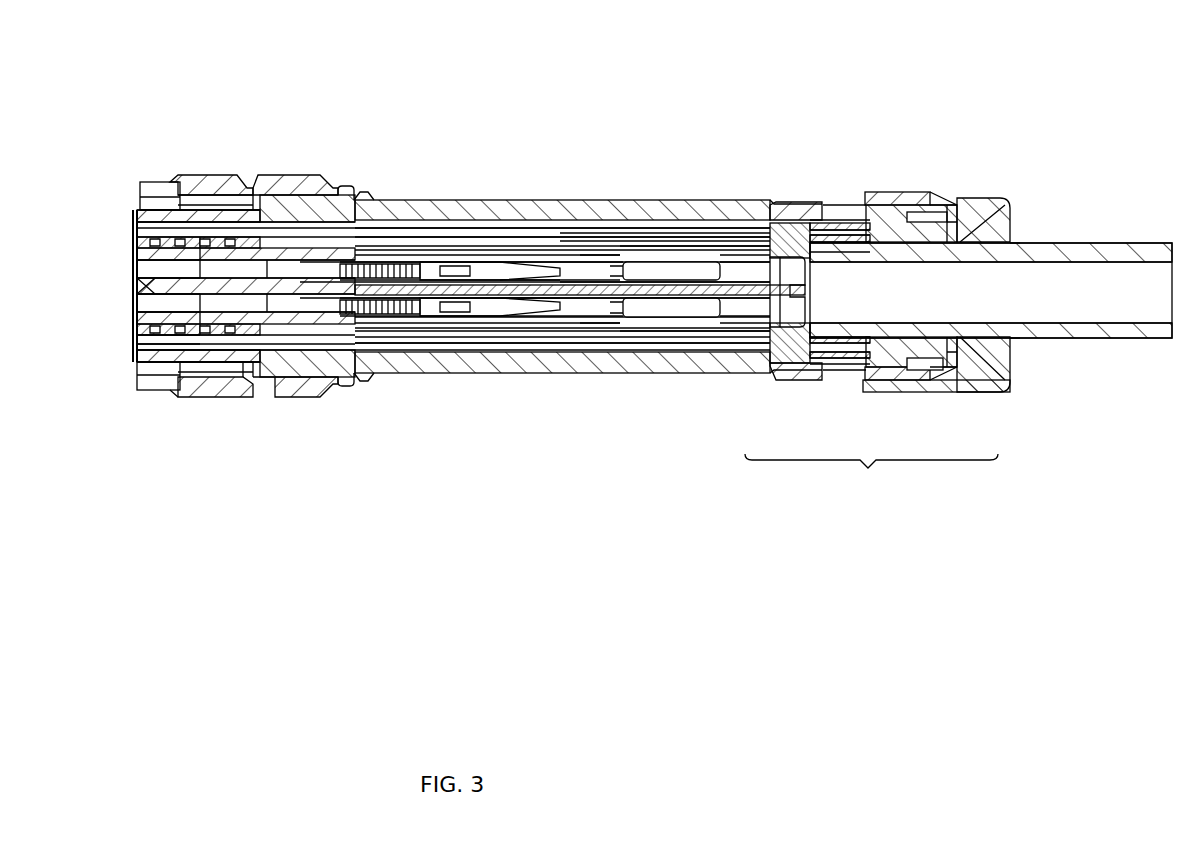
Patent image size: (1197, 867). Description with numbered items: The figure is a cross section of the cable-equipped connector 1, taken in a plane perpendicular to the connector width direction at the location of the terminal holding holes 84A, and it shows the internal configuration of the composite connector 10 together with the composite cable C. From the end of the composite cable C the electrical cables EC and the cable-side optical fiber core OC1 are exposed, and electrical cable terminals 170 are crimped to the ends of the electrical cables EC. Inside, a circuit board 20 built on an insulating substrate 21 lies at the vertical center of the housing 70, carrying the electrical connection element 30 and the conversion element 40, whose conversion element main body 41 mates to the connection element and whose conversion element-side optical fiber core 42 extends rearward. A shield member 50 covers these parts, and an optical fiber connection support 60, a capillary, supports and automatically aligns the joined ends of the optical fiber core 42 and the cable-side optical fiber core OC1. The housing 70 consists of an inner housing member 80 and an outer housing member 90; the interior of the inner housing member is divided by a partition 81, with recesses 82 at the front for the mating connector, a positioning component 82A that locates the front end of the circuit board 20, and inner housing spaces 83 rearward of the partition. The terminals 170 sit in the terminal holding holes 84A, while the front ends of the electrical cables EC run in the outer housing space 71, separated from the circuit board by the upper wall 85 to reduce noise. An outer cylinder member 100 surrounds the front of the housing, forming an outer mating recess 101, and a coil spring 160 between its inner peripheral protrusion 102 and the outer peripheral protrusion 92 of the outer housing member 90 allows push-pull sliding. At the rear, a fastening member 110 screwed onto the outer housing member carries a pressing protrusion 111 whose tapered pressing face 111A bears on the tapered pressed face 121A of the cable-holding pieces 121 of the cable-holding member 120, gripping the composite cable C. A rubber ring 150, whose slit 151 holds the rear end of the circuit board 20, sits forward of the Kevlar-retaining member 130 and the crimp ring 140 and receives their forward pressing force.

The connector assembly 1 is at (871, 475).
The composite connector 10 is at (748, 377).
The circuit board 20 is at (622, 337).
The substrate 21 is at (548, 300).
The electrical connection element 30 is at (395, 212).
The conversion element 40 is at (560, 154).
The conversion element main body 41 is at (440, 262).
The conversion element-side optical fiber core 42 is at (540, 262).
The shield member 50 is at (362, 194).
The optical fiber connection support 60 is at (692, 262).
The housing 70 is at (65, 213).
The outer housing space 71 is at (655, 262).
The inner housing member 80 is at (133, 222).
The partition 81 is at (133, 320).
The recesses 82 is at (160, 272).
The positioning component 82A is at (133, 290).
The inner housing spaces 83 is at (300, 228).
The terminal holding holes 84A is at (133, 246).
The upper wall 85 is at (625, 252).
The outer housing member 90 is at (137, 214).
The outer peripheral protrusion 92 is at (346, 186).
The outer cylinder member 100 is at (189, 170).
The outer mating recess 101 is at (140, 198).
The inner peripheral protrusion 102 is at (215, 195).
The fastening member 110 is at (890, 198).
The pressing protrusion 111 is at (1002, 205).
The tapered pressing face 111A is at (1008, 246).
The cable-holding member 120 is at (925, 205).
The cable-holding pieces 121 is at (962, 205).
The tapered pressed face 121A is at (985, 215).
The Kevlar-retaining member 130 is at (872, 222).
The crimp ring 140 is at (837, 221).
The rubber ring 150 is at (792, 240).
The slit 151 is at (770, 230).
The coil spring 160 is at (275, 188).
The electrical cable terminals 170 is at (157, 190).
The electrical cables EC is at (585, 235).
The cable-side optical fiber core OC1 is at (690, 345).
The composite cable C is at (1040, 342).